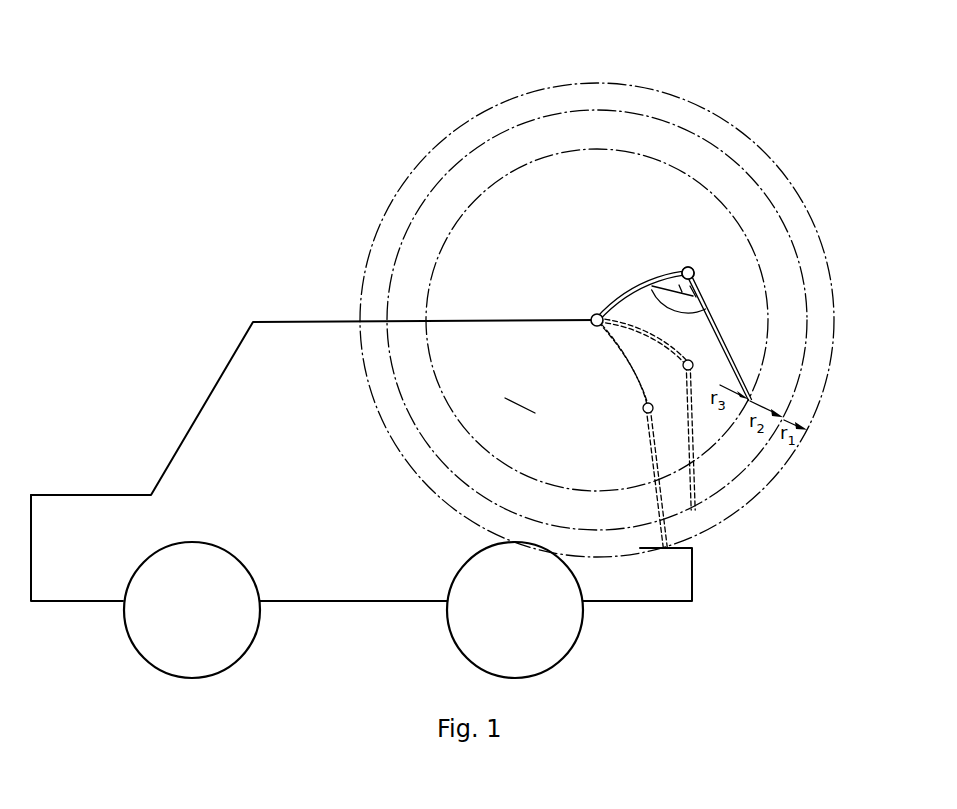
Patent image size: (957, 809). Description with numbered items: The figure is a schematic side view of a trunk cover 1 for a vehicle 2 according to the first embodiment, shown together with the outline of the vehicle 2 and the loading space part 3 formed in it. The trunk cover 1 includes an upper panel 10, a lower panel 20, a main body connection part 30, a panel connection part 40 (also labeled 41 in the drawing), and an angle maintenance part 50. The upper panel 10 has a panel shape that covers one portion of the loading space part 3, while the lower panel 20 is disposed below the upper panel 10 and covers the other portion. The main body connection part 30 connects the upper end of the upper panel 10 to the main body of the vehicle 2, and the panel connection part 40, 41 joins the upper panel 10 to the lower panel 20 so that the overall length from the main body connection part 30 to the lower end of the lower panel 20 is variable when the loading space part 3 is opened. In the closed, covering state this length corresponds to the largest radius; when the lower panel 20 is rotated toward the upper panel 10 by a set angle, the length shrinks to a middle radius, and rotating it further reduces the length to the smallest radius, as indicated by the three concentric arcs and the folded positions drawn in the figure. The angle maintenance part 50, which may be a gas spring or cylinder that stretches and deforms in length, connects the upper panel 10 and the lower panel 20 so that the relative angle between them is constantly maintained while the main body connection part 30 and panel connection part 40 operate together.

The trunk cover 1 is at (723, 215).
The vehicle 2 is at (280, 322).
The loading space part 3 is at (517, 407).
The upper panel 10 is at (646, 284).
The lower panel 20 is at (720, 327).
The main body connection part 30 is at (593, 315).
The panel connection part 40 is at (694, 268).
The joint axis 41 is at (688, 273).
The angle maintenance part 50 is at (693, 291).